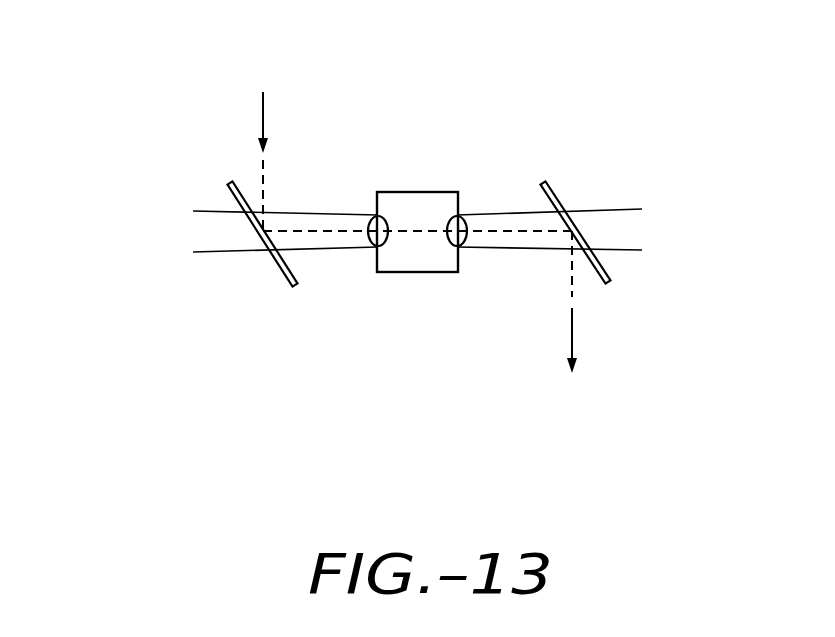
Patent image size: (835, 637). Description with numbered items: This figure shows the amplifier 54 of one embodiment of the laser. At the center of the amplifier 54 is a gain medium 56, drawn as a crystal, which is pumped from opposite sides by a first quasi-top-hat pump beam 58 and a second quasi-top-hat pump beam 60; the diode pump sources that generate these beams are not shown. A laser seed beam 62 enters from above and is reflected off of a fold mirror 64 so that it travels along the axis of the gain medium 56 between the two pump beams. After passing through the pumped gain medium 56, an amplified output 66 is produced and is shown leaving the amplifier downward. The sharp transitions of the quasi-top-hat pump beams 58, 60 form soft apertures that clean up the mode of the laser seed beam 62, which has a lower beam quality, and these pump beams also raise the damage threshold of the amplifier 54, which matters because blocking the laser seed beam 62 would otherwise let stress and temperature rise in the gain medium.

The amplifier 54 is at (470, 120).
The gain medium 56 is at (423, 265).
The first quasi-top-hat pump beam 58 is at (200, 234).
The second quasi-top-hat pump beam 60 is at (630, 229).
The laser seed beam 62 is at (265, 124).
The fold mirror 64 is at (268, 250).
The amplified output 66 is at (573, 334).